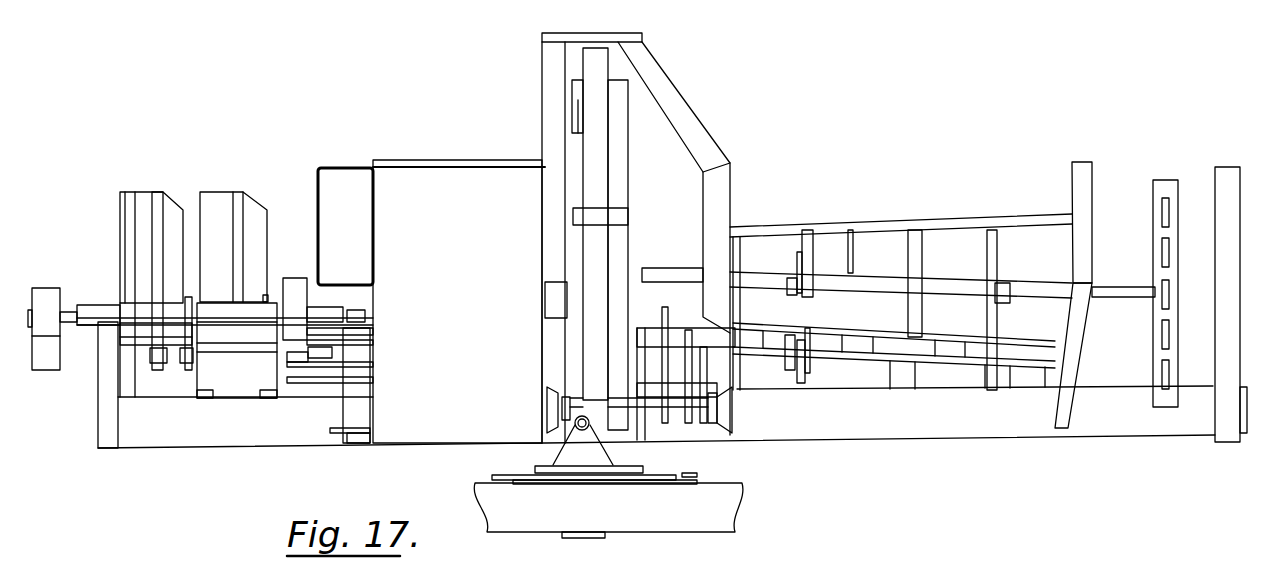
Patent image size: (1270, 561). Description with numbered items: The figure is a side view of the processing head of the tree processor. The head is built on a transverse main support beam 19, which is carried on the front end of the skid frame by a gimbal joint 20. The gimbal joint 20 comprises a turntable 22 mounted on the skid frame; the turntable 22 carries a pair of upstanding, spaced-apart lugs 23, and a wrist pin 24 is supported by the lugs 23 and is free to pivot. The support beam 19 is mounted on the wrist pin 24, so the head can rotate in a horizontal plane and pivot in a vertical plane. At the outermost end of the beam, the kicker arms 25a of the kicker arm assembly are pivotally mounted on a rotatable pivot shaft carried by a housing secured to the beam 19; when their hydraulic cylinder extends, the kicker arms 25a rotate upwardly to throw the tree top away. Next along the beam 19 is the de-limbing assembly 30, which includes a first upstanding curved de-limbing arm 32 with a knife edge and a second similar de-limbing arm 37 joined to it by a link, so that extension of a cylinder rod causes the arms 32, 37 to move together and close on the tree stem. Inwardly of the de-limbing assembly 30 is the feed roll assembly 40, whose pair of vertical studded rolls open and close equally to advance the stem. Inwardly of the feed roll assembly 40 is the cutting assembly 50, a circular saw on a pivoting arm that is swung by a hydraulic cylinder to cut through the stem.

The transverse support beam 19 is at (895, 442).
The gimbal joint 20 is at (677, 460).
The turntable 22 is at (685, 477).
The lugs 23 is at (550, 458).
The wrist pin 24 is at (613, 457).
The kicker arms 25a is at (44, 288).
The de-limbing assembly 30 is at (225, 278).
The first upstanding curved de-limbing arm 32 is at (181, 205).
The second de-limbing arm 37 is at (262, 205).
The feed roll assembly 40 is at (457, 158).
The cutting assembly 50 is at (630, 172).